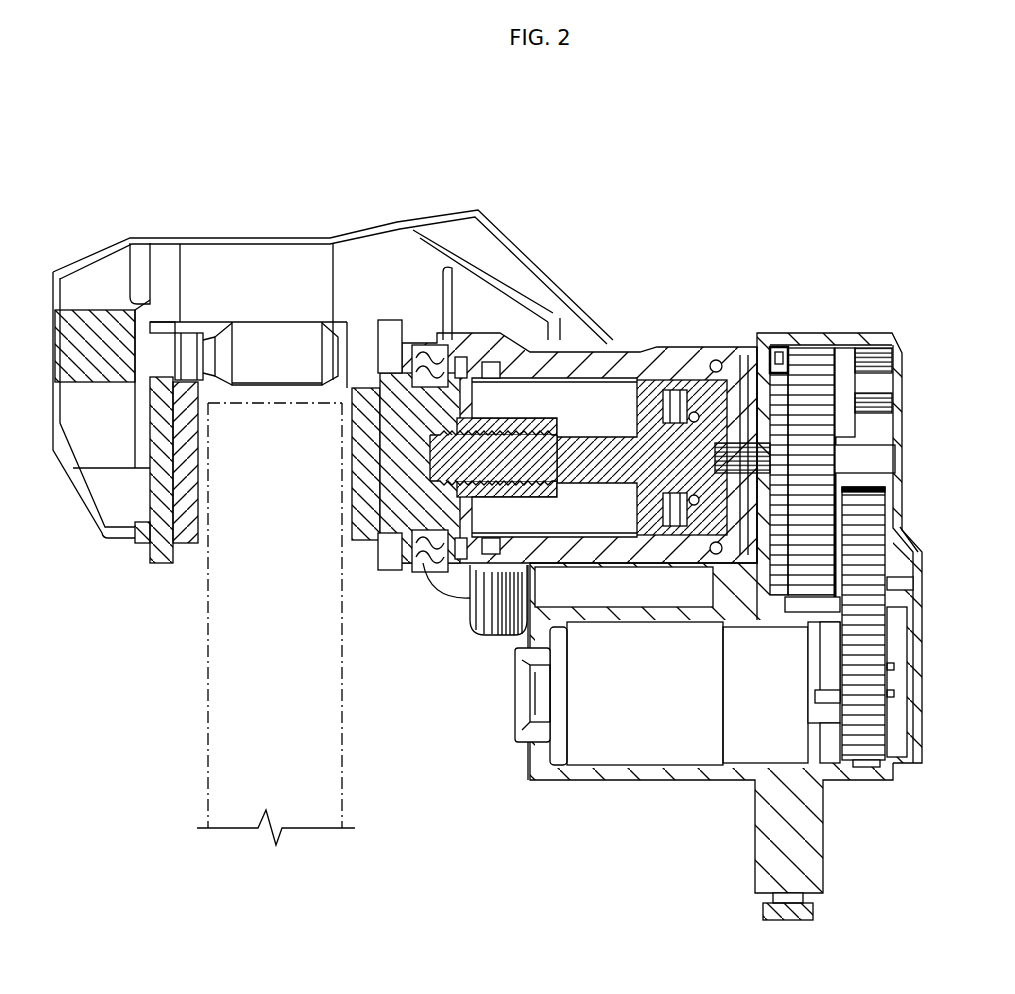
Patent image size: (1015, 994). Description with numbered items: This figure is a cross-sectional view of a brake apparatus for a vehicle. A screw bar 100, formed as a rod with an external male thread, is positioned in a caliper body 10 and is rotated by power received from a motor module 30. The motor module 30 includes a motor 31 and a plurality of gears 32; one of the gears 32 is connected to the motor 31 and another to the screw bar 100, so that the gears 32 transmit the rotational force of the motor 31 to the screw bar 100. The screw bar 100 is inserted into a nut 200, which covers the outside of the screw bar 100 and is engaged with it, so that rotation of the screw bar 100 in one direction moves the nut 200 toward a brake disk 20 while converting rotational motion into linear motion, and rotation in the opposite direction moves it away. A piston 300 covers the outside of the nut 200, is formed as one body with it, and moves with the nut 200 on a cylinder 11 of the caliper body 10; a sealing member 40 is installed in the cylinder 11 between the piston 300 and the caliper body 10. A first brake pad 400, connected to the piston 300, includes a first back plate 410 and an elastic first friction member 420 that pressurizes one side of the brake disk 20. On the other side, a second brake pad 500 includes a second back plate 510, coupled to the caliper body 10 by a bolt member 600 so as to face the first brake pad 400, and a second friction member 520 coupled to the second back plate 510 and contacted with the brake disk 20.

The caliper body 10 is at (533, 287).
The cylinder 11 is at (630, 367).
The brake disk 20 is at (343, 790).
The motor module 30 is at (893, 562).
The motor 31 is at (663, 737).
The gears 32 is at (865, 618).
The sealing member 40 is at (433, 340).
The screw bar 100 is at (695, 460).
The nut 200 is at (533, 427).
The piston 300 is at (467, 580).
The first brake pad 400 is at (403, 512).
The first back plate 410 is at (388, 562).
The first friction member 420 is at (365, 528).
The second brake pad 500 is at (148, 537).
The second back plate 510 is at (158, 550).
The second friction member 520 is at (188, 528).
The bolt member 600 is at (190, 343).